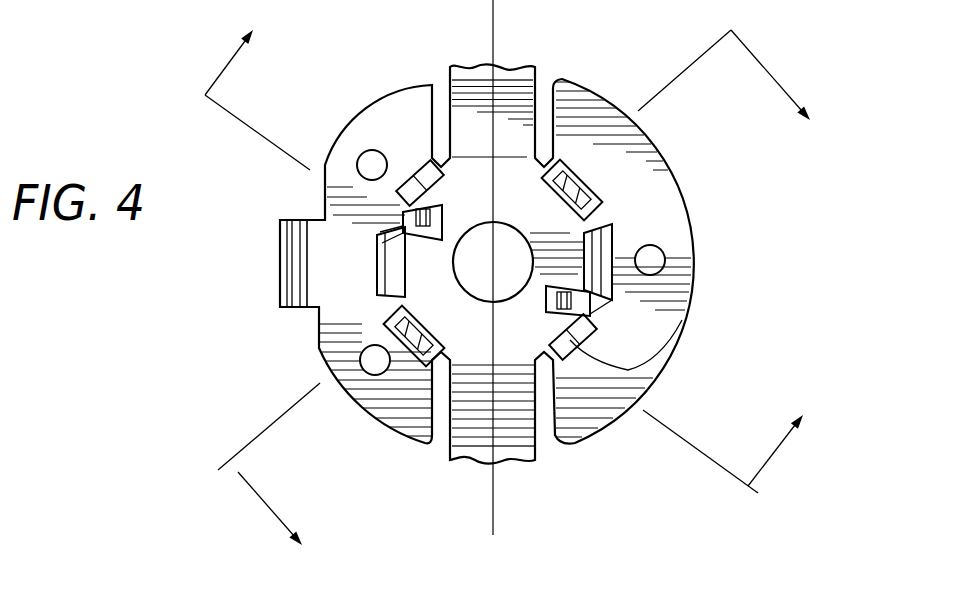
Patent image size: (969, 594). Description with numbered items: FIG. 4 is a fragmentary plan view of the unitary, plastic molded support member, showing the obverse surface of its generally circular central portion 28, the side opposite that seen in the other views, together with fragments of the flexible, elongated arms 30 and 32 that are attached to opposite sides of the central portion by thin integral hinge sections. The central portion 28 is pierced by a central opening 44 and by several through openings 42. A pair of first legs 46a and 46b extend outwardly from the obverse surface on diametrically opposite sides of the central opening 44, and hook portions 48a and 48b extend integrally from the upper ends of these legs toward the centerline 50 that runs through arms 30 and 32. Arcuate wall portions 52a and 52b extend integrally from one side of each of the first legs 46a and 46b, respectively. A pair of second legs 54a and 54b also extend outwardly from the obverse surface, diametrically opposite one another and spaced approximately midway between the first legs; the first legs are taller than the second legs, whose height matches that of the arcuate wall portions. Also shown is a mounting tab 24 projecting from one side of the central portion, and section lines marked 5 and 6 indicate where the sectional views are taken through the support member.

The mounting tab 24 is at (278, 272).
The central portion 28 is at (657, 226).
The elongated arm 30 is at (472, 66).
The elongated arm 32 is at (463, 462).
The through openings 42 is at (574, 343).
The central opening 44 is at (500, 253).
The first leg 46a is at (412, 236).
The first leg 46b is at (580, 319).
The hook portion 48a is at (456, 214).
The hook portion 48b is at (545, 301).
The centerline 50 is at (504, 54).
The arcuate wall portion 52a is at (410, 168).
The arcuate wall portion 52b is at (572, 352).
The second leg 54a is at (383, 325).
The second leg 54b is at (585, 192).
The section line 5- 5 is at (499, 265).
The section line 6- 6 is at (513, 287).